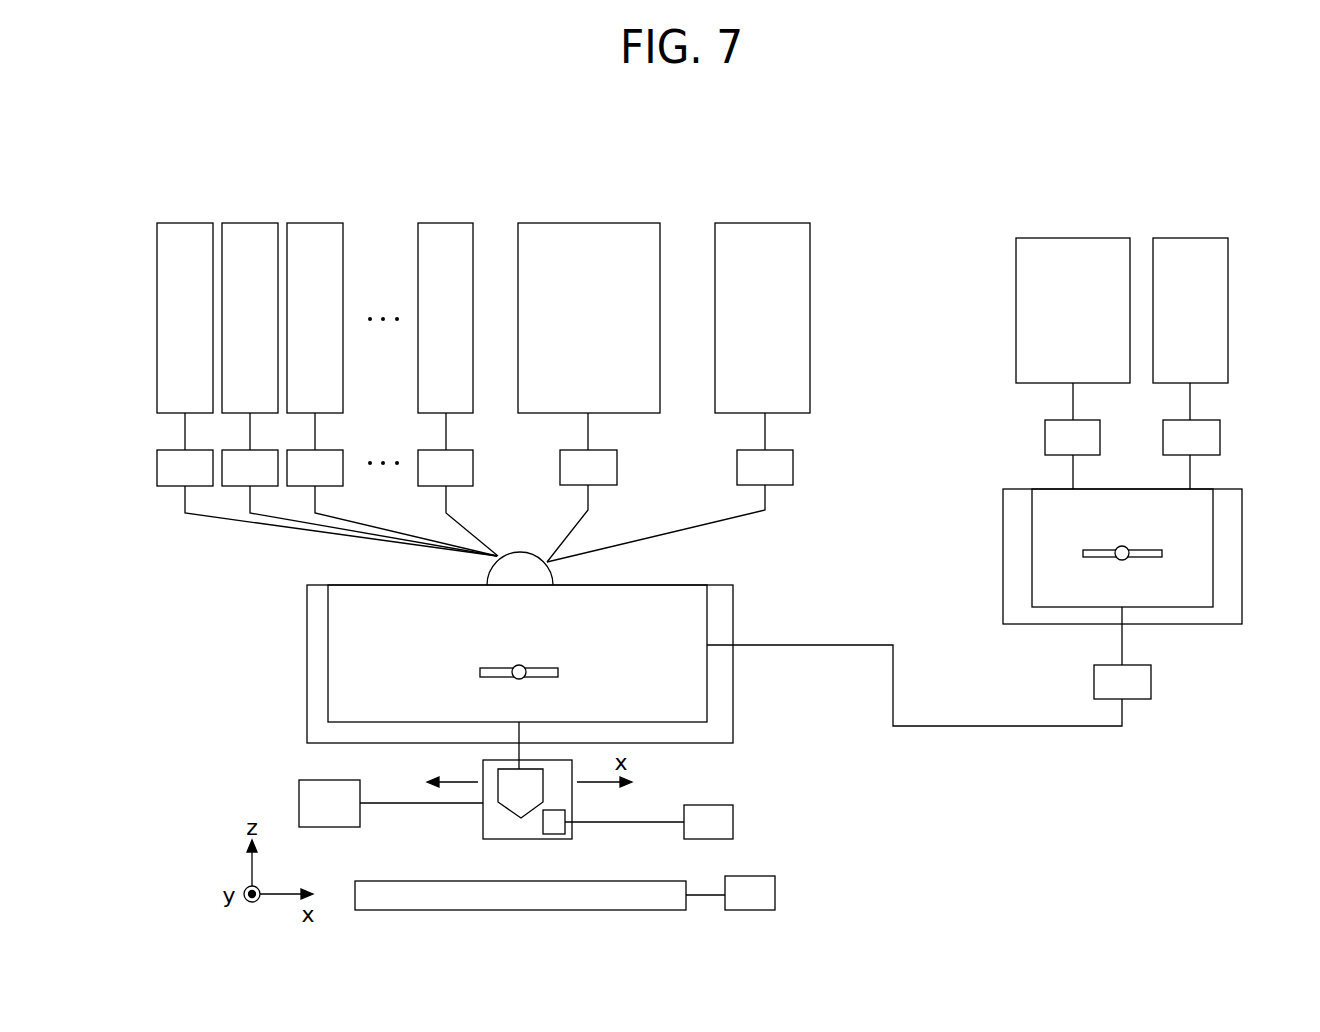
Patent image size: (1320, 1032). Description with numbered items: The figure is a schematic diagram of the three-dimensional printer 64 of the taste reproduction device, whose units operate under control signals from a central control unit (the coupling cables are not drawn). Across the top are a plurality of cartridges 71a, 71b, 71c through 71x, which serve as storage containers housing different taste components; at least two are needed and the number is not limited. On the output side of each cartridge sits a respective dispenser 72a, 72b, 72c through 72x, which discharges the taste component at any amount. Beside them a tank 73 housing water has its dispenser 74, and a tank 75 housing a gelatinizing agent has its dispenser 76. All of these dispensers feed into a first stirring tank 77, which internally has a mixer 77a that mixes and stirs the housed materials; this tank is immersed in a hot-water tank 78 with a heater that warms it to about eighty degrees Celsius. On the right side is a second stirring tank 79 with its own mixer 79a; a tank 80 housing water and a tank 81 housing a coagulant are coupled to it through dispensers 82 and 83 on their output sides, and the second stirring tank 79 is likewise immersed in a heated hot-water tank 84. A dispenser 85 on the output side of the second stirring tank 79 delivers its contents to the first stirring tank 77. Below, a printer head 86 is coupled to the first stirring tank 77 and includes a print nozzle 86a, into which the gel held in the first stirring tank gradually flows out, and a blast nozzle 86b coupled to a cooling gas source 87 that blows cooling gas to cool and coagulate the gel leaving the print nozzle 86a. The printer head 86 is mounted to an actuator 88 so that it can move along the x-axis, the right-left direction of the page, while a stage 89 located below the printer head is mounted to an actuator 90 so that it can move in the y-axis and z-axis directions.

The 3D printer 64 is at (1277, 174).
The cartridge 71a is at (192, 223).
The cartridge 71b is at (257, 223).
The cartridge 71c is at (318, 223).
The cartridge 71x is at (447, 223).
The dispenser 72a is at (170, 487).
The dispenser 72b is at (235, 487).
The dispenser 72c is at (300, 487).
The dispenser 72x is at (473, 487).
The tank 73 is at (548, 223).
The dispenser 74 is at (613, 452).
The tank 75 is at (732, 223).
The dispenser 76 is at (790, 452).
The first stirring tank 77 is at (687, 585).
The mixer 77a is at (519, 665).
The hot-water tank 78 is at (733, 720).
The second stirring tank 79 is at (1040, 488).
The mixer 79a is at (1122, 546).
The tank 80 is at (1035, 238).
The tank 81 is at (1175, 238).
The dispenser 82 is at (1045, 433).
The dispenser 83 is at (1163, 440).
The hot-water tank 84 is at (1002, 625).
The dispenser 85 is at (1151, 680).
The printer head 86 is at (482, 834).
The print nozzle 86a is at (497, 773).
The blast nozzle 86b is at (565, 812).
The cooling gas source 87 is at (733, 806).
The actuator 88 is at (299, 781).
The stage 89 is at (595, 881).
The actuator 90 is at (777, 876).